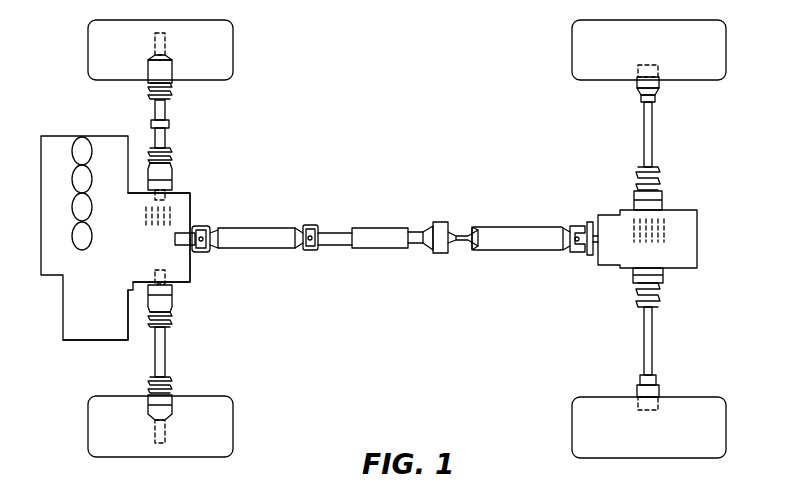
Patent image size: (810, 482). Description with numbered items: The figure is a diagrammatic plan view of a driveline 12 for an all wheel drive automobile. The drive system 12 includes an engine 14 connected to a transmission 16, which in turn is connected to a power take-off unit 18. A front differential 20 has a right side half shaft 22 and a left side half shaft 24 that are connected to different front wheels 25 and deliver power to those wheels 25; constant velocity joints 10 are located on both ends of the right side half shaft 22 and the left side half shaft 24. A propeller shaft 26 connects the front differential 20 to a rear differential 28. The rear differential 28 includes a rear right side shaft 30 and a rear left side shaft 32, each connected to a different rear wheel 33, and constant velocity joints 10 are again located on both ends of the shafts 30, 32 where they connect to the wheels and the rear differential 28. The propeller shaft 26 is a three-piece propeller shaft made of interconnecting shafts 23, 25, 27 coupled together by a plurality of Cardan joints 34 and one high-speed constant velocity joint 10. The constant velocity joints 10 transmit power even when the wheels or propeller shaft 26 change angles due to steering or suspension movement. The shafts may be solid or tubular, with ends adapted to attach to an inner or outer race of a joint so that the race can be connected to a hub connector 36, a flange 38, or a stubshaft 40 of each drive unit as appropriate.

The constant velocity joint 10 is at (150, 82).
The driveline 12 is at (379, 63).
The engine 14 is at (51, 160).
The transmission 16 is at (76, 318).
The power take-off unit 18 is at (185, 200).
The front differential 20 is at (185, 270).
The right side half shaft 22 is at (165, 140).
The interconnecting shaft 23 is at (262, 228).
The left side half shaft 24 is at (165, 355).
The front wheel 25 is at (218, 42).
The propeller shaft 26 is at (380, 255).
The interconnecting shaft 27 is at (492, 226).
The rear differential 28 is at (698, 228).
The rear right side shaft 30 is at (652, 133).
The rear left side shaft 32 is at (652, 334).
The rear wheel 33 is at (720, 43).
The Cardan joint 34 is at (205, 226).
The hub connector 36 is at (168, 80).
The flange 38 is at (172, 188).
The stubshaft 40 is at (183, 242).